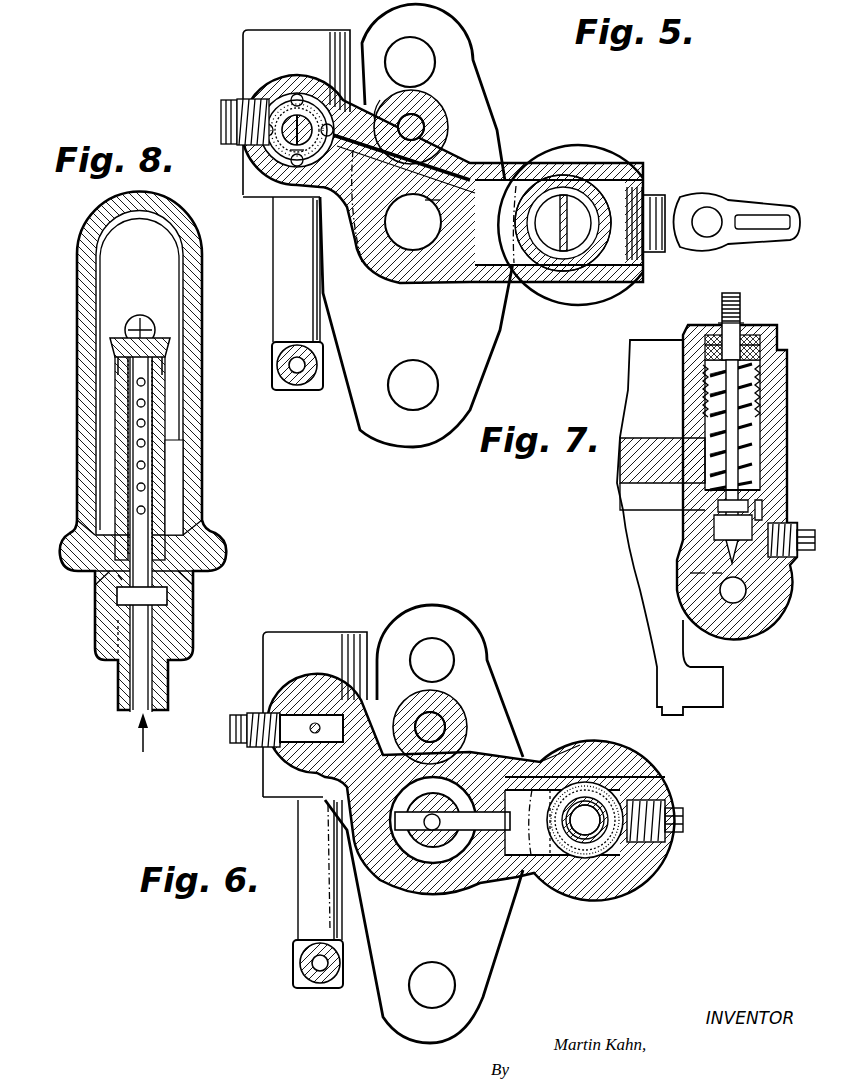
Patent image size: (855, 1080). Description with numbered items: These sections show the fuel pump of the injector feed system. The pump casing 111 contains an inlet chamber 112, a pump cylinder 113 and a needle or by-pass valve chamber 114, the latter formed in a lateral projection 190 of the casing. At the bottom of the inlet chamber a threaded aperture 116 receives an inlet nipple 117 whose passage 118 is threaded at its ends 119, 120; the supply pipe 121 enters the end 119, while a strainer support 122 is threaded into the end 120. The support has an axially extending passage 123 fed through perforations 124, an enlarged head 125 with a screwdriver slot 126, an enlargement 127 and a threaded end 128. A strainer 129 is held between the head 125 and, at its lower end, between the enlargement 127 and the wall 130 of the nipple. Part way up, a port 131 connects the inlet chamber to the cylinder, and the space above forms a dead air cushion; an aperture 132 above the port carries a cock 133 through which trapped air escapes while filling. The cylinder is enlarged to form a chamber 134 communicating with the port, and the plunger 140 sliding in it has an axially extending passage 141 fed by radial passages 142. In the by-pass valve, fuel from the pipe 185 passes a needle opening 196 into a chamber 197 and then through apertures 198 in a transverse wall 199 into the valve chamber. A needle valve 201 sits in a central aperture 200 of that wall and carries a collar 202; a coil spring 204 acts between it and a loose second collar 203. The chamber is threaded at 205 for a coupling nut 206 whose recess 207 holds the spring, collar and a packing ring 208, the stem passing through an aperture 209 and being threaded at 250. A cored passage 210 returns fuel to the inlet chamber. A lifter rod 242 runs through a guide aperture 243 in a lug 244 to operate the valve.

In FIG. 5, the pump casing 111 is at (415, 272).
In FIG. 7, the pump casing 111 is at (670, 527).
In FIG. 6, the pump casing 111 is at (480, 757).
In FIG. 5, the inlet chamber 112 is at (518, 190).
In FIG. 8, the inlet chamber 112 is at (120, 237).
In FIG. 6, the inlet chamber 112 is at (542, 785).
In FIG. 5, the pump cylinder 113 is at (470, 166).
In FIG. 6, the pump cylinder 113 is at (493, 760).
In FIG. 5, the needle or by-pass valve chamber 114 is at (300, 100).
In FIG. 7, the needle or by-pass valve chamber 114 is at (712, 433).
In FIG. 8, the threaded aperture 116 is at (183, 540).
In FIG. 8, the inlet nipple 117 is at (180, 613).
In FIG. 6, the inlet nipple 117 is at (573, 847).
In FIG. 8, the passage 118 is at (127, 597).
In FIG. 8, the threaded end 119 is at (120, 637).
In FIG. 8, the threaded end 120 is at (118, 575).
In FIG. 8, the supply pipe 121 is at (170, 688).
In FIG. 8, the strainer support 122 is at (143, 410).
In FIG. 6, the strainer support 122 is at (590, 837).
In FIG. 8, the axially extending passage 123 is at (132, 383).
In FIG. 6, the axially extending passage 123 is at (580, 817).
In FIG. 8, the perforations 124 is at (163, 365).
In FIG. 6, the perforations 124 is at (625, 858).
In FIG. 5, the enlarged head 125 is at (587, 220).
In FIG. 8, the enlarged head 125 is at (157, 350).
In FIG. 5, the slot 126 is at (568, 200).
In FIG. 8, the slot 126 is at (153, 337).
In FIG. 8, the enlargement 127 is at (167, 513).
In FIG. 8, the threaded end 128 is at (148, 570).
In FIG. 8, the strainer 129 is at (167, 438).
In FIG. 6, the strainer 129 is at (597, 842).
In FIG. 8, the wall 130 is at (107, 540).
In FIG. 6, the port 131 is at (515, 780).
In FIG. 8, the aperture 132 is at (142, 322).
In FIG. 5, the cock 133 is at (700, 193).
In FIG. 6, the chamber 134 is at (427, 782).
In FIG. 6, the plunger 140 is at (430, 877).
In FIG. 6, the axially extending passage 141 is at (447, 857).
In FIG. 6, the radial passages 142 is at (400, 853).
In FIG. 5, the pipe 185 is at (297, 382).
In FIG. 6, the pipe 185 is at (307, 970).
In FIG. 5, the lateral projection 190 is at (268, 80).
In FIG. 7, the lateral projection 190 is at (687, 390).
In FIG. 6, the lateral projection 190 is at (290, 678).
In FIG. 7, the needle opening 196 is at (717, 573).
In FIG. 7, the chamber 197 is at (760, 540).
In FIG. 6, the chamber 197 is at (250, 743).
In FIG. 5, the apertures 198 is at (295, 157).
In FIG. 7, the apertures 198 is at (760, 510).
In FIG. 5, the transverse wall 199 is at (260, 88).
In FIG. 7, the transverse wall 199 is at (717, 515).
In FIG. 7, the central aperture 200 is at (723, 535).
In FIG. 7, the needle valve 201 is at (697, 573).
In FIG. 6, the needle valve 201 is at (315, 728).
In FIG. 7, the collar 202 is at (712, 500).
In FIG. 7, the second collar 203 is at (710, 350).
In FIG. 5, the coil spring 204 is at (280, 103).
In FIG. 7, the coil spring 204 is at (705, 403).
In FIG. 7, the interiorly threaded portion 205 is at (702, 380).
In FIG. 7, the coupling nut 206 is at (750, 328).
In FIG. 7, the recess 207 is at (702, 370).
In FIG. 7, the packing ring 208 is at (717, 325).
In FIG. 7, the aperture 209 is at (718, 323).
In FIG. 5, the cored passage 210 is at (432, 200).
In FIG. 7, the cored passage 210 is at (717, 490).
In FIG. 5, the lifter rod 242 is at (420, 128).
In FIG. 6, the lifter rod 242 is at (427, 720).
In FIG. 5, the guide aperture 243 is at (424, 117).
In FIG. 5, the lug 244 is at (441, 97).
In FIG. 5, the threaded upper end of needle valve stem 250 is at (300, 130).
In FIG. 7, the threaded upper end of needle valve stem 250 is at (738, 300).